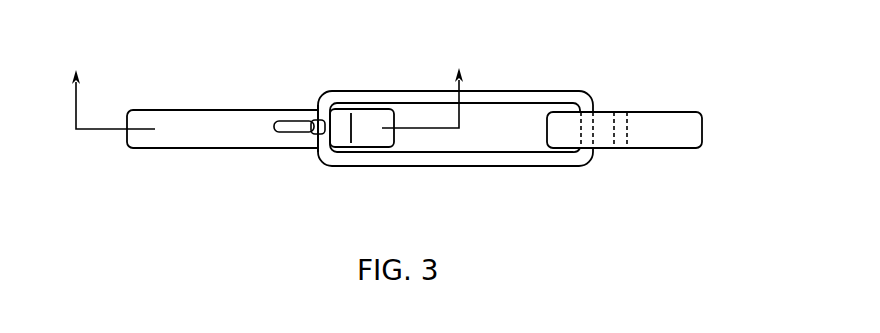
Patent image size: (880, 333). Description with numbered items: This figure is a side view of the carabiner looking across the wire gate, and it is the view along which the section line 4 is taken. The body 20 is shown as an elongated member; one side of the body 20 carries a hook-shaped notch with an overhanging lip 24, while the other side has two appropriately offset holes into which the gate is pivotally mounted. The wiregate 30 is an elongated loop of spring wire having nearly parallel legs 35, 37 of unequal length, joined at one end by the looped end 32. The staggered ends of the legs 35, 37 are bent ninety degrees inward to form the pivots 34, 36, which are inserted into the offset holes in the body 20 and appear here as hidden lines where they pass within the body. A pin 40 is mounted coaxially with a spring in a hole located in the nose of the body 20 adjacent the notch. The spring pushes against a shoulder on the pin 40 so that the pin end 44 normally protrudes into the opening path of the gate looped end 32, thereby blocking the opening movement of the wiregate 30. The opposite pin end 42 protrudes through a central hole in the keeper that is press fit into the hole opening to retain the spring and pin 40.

The section line 4- 4 is at (268, 104).
The body 20 is at (196, 134).
The overhanging lip 24 is at (356, 126).
The wiregate 30 is at (428, 168).
The looped end 32 is at (322, 110).
The pivot 34 is at (587, 150).
The leg 35 is at (415, 98).
The pivot 36 is at (616, 112).
The leg 37 is at (489, 160).
The pin 40 is at (293, 146).
The pin end 42 is at (278, 118).
The pin end 44 is at (320, 137).